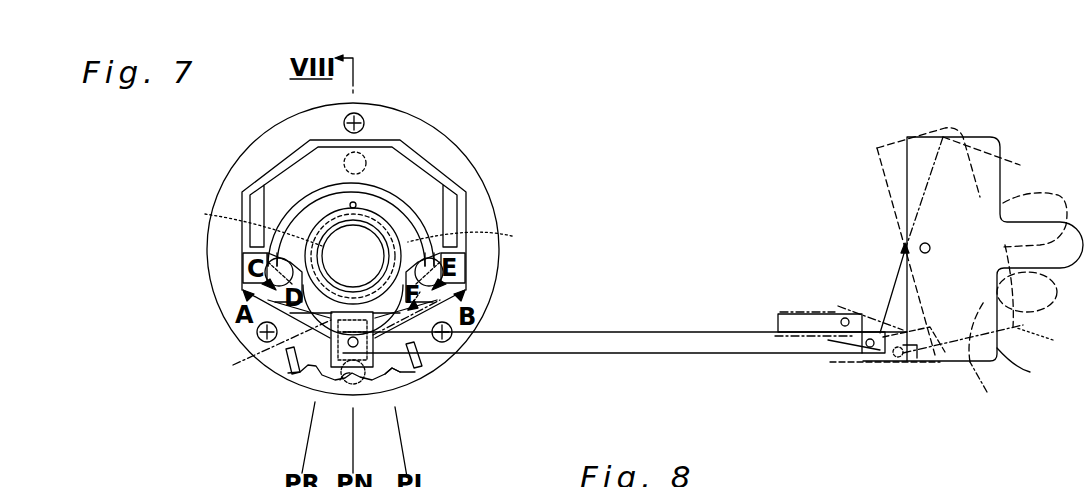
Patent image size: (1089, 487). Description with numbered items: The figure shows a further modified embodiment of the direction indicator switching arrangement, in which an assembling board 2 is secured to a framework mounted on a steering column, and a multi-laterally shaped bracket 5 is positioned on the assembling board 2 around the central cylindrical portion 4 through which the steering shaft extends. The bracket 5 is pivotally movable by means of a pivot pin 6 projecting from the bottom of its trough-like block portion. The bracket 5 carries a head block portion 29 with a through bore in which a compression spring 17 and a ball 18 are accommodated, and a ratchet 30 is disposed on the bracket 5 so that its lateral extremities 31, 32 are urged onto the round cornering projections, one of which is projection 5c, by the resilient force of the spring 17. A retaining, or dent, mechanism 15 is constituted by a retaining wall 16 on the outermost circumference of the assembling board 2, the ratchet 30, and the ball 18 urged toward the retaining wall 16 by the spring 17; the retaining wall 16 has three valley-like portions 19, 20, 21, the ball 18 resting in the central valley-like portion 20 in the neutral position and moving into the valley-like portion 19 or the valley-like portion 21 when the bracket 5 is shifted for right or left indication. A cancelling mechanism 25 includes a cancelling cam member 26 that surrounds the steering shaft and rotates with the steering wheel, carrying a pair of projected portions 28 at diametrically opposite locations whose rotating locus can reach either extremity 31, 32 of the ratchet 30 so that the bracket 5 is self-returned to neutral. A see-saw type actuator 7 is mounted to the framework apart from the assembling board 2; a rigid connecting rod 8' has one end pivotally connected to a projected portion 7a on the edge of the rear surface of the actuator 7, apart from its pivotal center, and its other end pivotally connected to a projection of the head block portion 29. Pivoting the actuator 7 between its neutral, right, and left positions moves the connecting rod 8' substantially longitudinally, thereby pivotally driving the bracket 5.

The assembling board 2 is at (453, 158).
The cylindrical portion 4 is at (357, 212).
The bracket 5 is at (466, 208).
The round cornering projection 5c is at (466, 268).
The pivot pin 6 is at (366, 163).
The actuator 7 is at (922, 147).
The projected portion 7a is at (877, 360).
The connecting rod 8' is at (641, 320).
The retaining (dent) mechanism 15 is at (301, 385).
The retaining wall 16 is at (400, 371).
The spring 17 is at (320, 344).
The ball 18 is at (356, 380).
The valley-like portion 19 is at (295, 383).
The valley-like portion 20 is at (348, 382).
The valley-like portion 21 is at (400, 378).
The cancelling mechanism 25 is at (292, 214).
The cancelling cam member 26 is at (392, 220).
The projected portions 28 is at (355, 224).
The head block portion 29 is at (398, 341).
The ratchet 30 is at (382, 301).
The lateral extremity 31 is at (468, 292).
The lateral extremity 32 is at (290, 265).